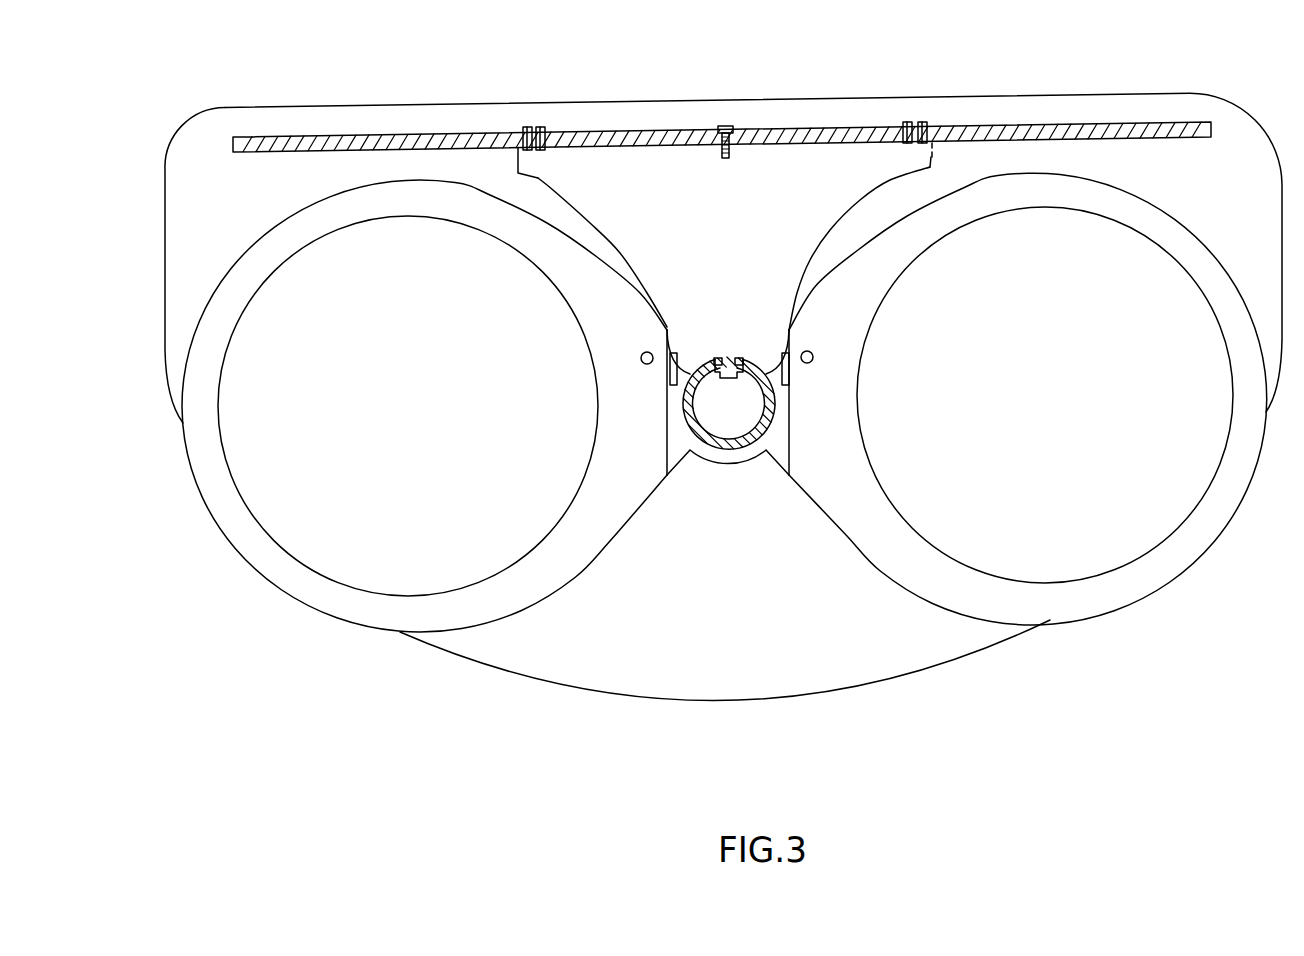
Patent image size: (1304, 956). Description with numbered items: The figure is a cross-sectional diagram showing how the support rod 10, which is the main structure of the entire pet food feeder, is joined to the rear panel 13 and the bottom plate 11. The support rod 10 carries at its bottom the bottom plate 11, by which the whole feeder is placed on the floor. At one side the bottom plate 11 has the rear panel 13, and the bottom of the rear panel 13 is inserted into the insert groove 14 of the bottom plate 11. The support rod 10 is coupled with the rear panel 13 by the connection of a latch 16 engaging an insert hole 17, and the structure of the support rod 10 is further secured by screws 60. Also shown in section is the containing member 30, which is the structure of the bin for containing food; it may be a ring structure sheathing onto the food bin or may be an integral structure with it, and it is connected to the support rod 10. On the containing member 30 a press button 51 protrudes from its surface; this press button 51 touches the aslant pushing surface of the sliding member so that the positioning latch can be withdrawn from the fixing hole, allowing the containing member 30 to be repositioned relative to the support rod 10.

The support rod 10 is at (727, 447).
The bottom plate 11 is at (948, 655).
The rear panel 13 is at (1113, 132).
The insert groove 14 is at (1043, 124).
The latch 16 is at (541, 123).
The insert hole 17 is at (550, 145).
The containing member 30 is at (588, 535).
The press button 51 is at (641, 358).
The screws 60 is at (727, 124).